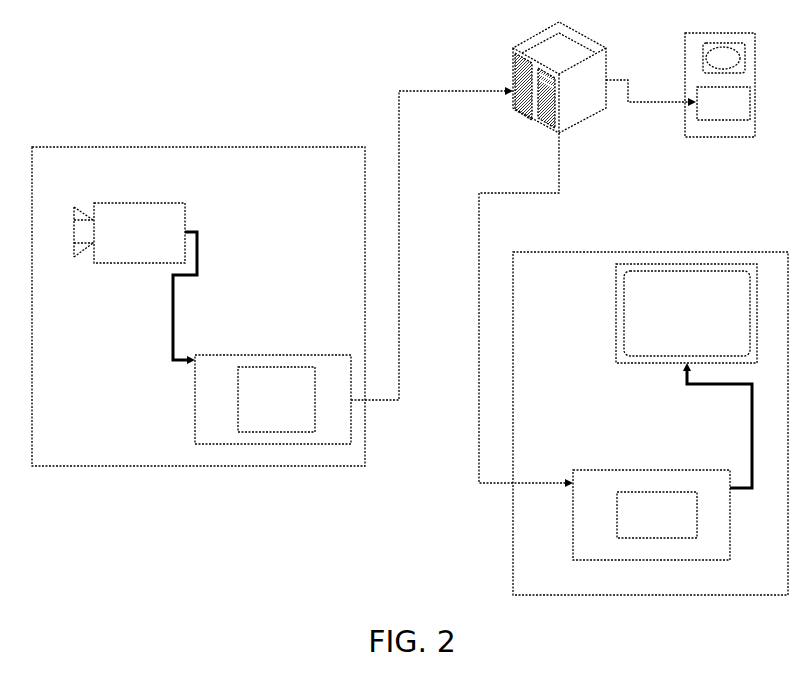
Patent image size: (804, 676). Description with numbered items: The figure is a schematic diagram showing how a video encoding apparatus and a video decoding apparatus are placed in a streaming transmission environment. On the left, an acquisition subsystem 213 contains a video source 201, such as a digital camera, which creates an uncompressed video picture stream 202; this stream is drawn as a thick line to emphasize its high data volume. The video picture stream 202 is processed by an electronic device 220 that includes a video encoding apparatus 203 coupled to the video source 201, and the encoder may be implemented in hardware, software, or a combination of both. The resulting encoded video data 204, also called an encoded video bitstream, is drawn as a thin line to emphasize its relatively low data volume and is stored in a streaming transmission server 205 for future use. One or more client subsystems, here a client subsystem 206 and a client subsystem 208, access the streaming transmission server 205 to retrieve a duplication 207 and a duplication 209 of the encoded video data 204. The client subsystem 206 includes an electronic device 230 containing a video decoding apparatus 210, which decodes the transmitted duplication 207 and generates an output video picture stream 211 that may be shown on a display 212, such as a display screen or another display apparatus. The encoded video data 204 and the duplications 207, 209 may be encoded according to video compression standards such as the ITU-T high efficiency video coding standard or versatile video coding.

The video source 201 is at (138, 202).
The video picture stream 202 is at (172, 306).
The video encoding apparatus 203 is at (276, 399).
The encoded video data 204 is at (398, 123).
The streaming transmission server 205 is at (512, 66).
The client subsystem 206 is at (513, 570).
The duplication of the encoded video data 207 is at (478, 280).
The client subsystem 208 is at (684, 60).
The duplication of the encoded video data 209 is at (628, 105).
The video decoding apparatus 210 is at (657, 515).
The output video picture stream 211 is at (750, 460).
The display 212 is at (615, 337).
The acquisition subsystem 213 is at (220, 467).
The electronic device 220 is at (272, 354).
The electronic device 230 is at (573, 548).